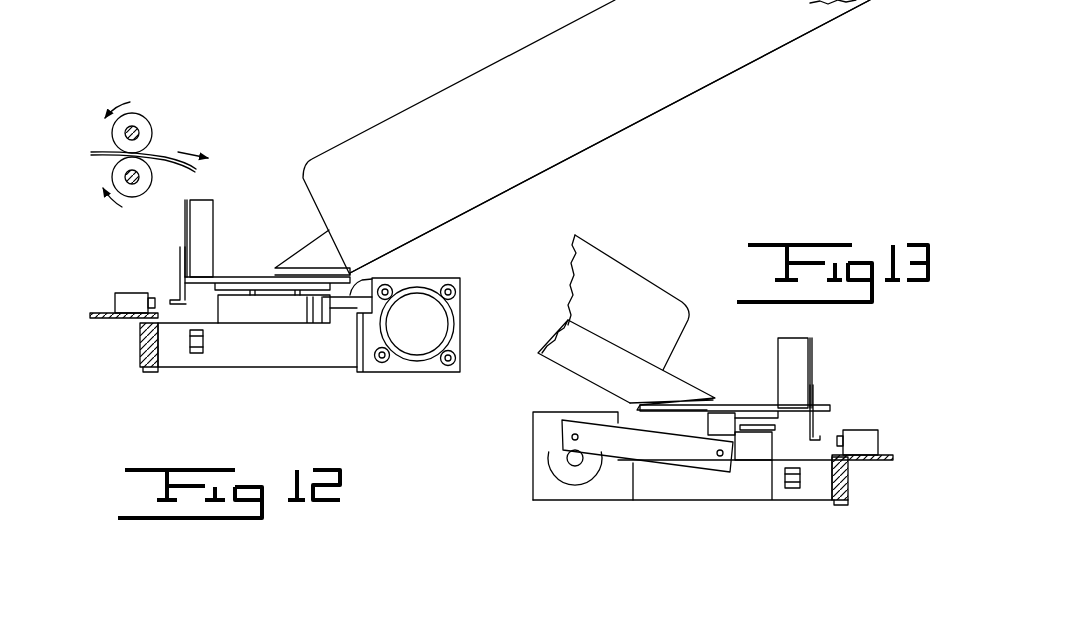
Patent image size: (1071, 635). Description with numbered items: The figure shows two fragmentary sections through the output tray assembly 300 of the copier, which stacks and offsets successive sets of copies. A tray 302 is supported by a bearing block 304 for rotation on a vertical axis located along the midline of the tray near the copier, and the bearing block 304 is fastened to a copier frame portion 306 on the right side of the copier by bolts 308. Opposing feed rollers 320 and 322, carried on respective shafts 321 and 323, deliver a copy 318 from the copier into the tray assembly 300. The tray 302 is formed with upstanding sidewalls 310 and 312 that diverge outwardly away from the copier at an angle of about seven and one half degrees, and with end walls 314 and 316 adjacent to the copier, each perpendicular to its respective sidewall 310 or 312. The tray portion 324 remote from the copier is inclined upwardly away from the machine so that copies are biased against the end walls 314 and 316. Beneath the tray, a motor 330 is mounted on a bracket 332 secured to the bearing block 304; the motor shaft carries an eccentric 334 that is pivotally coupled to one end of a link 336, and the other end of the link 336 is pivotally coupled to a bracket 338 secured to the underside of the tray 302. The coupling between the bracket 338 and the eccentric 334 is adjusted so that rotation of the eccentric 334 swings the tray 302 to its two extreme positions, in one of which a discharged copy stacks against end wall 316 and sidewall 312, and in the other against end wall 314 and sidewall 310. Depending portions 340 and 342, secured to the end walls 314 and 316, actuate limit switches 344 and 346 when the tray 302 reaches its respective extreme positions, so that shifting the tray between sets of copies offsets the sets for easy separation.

In FIG. 12, the output tray assembly 300 is at (505, 242).
In FIG. 13, the output tray assembly 300 is at (518, 420).
In FIG. 12, the tray 302 is at (250, 272).
In FIG. 13, the tray 302 is at (747, 407).
In FIG. 12, the bearing block 304 is at (300, 368).
In FIG. 13, the bearing block 304 is at (747, 503).
In FIG. 12, the copier frame portion 306 is at (153, 373).
In FIG. 13, the copier frame portion 306 is at (837, 503).
In FIG. 12, the bolts 308 is at (208, 343).
In FIG. 13, the bolts 308 is at (792, 490).
In FIG. 12, the sidewall 310 is at (345, 142).
In FIG. 13, the sidewall 310 is at (663, 283).
In FIG. 12, the sidewall 312 is at (320, 237).
In FIG. 13, the sidewall 312 is at (605, 337).
In FIG. 12, the end wall 314 is at (205, 223).
In FIG. 13, the end wall 316 is at (800, 367).
In FIG. 12, the copy 318 is at (165, 157).
In FIG. 12, the feed roller 320 is at (152, 122).
In FIG. 12, the shaft 321 is at (140, 120).
In FIG. 12, the feed roller 322 is at (148, 188).
In FIG. 12, the shaft 323 is at (136, 197).
In FIG. 12, the tray portion 324 is at (652, 117).
In FIG. 13, the tray portion 324 is at (563, 372).
In FIG. 12, the motor 330 is at (457, 327).
In FIG. 12, the bracket 332 is at (407, 372).
In FIG. 13, the bracket 332 is at (575, 503).
In FIG. 13, the eccentric 334 is at (552, 455).
In FIG. 12, the link 336 is at (355, 293).
In FIG. 13, the link 336 is at (690, 470).
In FIG. 13, the bracket 338 is at (725, 417).
In FIG. 12, the depending portion 340 is at (178, 287).
In FIG. 13, the depending portion 342 is at (818, 435).
In FIG. 12, the limit switch 344 is at (128, 312).
In FIG. 13, the limit switch 346 is at (863, 430).